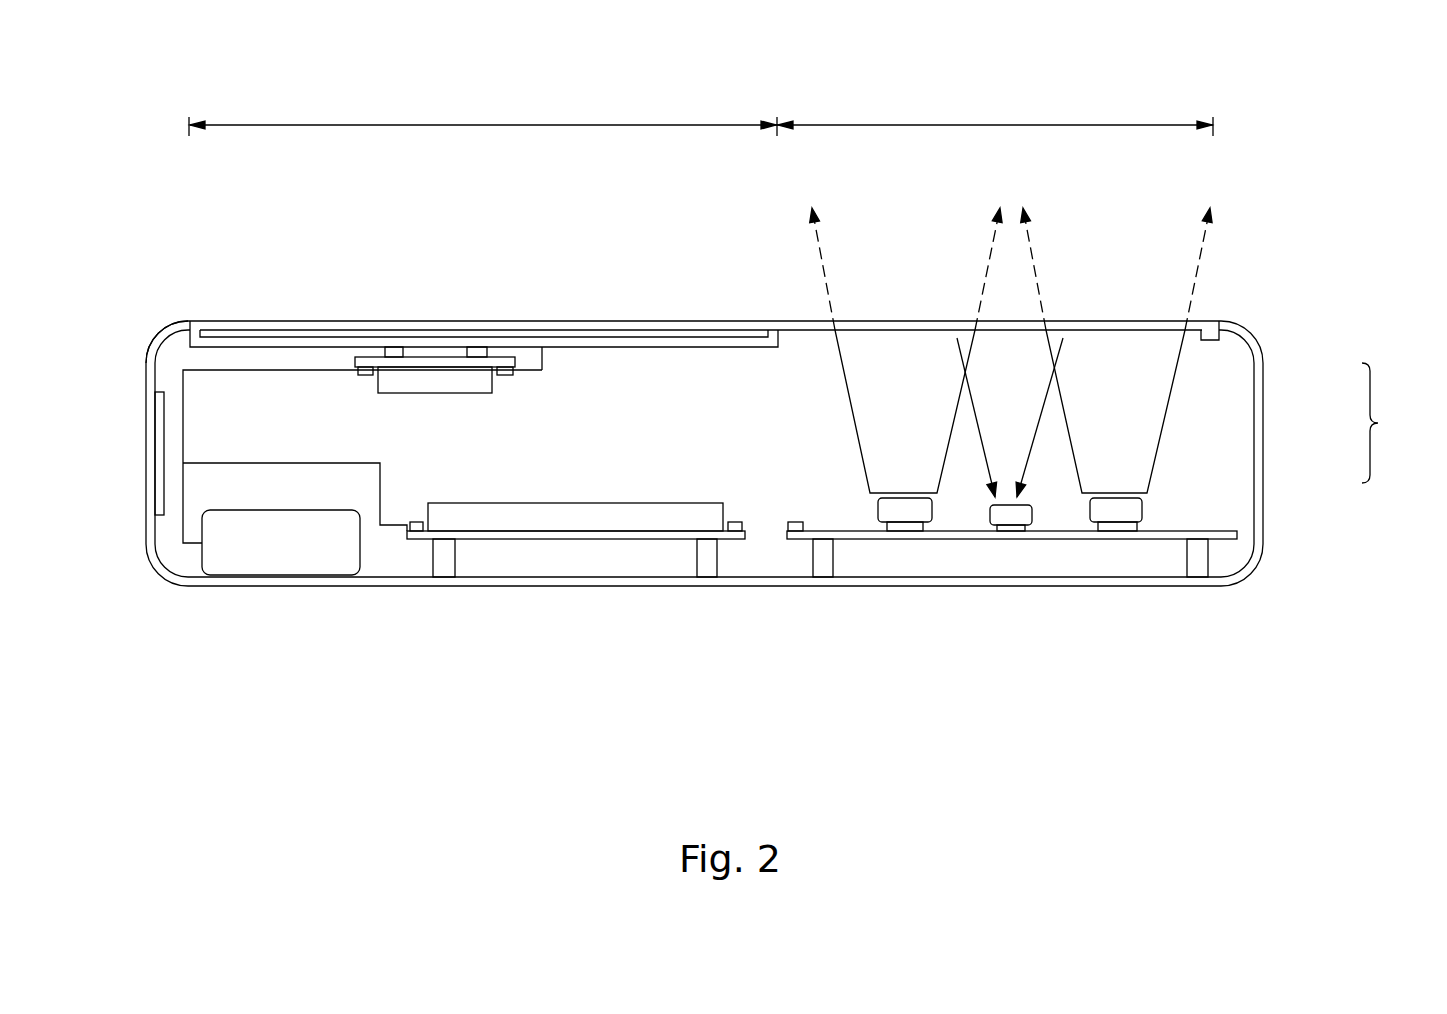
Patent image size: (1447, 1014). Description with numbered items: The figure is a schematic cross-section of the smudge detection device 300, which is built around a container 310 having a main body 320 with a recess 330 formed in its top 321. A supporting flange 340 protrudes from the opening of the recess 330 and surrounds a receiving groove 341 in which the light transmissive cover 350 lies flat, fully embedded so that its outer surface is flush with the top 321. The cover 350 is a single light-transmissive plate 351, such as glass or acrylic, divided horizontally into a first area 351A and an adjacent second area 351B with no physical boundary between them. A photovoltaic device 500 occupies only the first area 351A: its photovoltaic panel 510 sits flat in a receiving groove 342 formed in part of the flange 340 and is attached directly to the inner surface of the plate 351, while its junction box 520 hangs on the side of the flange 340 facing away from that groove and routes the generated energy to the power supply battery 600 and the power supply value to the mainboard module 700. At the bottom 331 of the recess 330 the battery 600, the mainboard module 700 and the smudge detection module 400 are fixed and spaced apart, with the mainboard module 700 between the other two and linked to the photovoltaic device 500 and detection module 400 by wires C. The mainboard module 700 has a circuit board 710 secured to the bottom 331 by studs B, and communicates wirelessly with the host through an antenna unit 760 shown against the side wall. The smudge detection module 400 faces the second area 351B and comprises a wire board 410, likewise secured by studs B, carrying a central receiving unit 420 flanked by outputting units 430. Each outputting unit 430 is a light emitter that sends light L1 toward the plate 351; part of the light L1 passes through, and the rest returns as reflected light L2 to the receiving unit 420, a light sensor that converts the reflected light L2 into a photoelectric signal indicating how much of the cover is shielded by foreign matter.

The smudge detection device 300 is at (1341, 86).
The container 310 is at (1396, 423).
The main body 320 is at (1258, 467).
The top 321 is at (180, 321).
The recess 330 is at (1212, 423).
The bottom 331 is at (395, 558).
The supporting flange 340 is at (1210, 340).
The receiving groove 341 is at (1220, 322).
The receiving groove 342 is at (192, 340).
The light transmissive cover 350 is at (212, 318).
The single light-transmissive plate 351 is at (290, 325).
The first area 351A is at (483, 116).
The second area 351B is at (995, 116).
The smudge detection module 400 is at (838, 672).
The wire board 410 is at (850, 539).
The receiving unit 420 is at (1012, 520).
The outputting unit 430 is at (905, 508).
The photovoltaic device 500 is at (345, 222).
The photovoltaic panel 510 is at (398, 333).
The junction box 520 is at (472, 380).
The power supply battery 600 is at (223, 562).
The mainboard module 700 is at (607, 531).
The circuit board 710 is at (493, 535).
The antenna unit 760 is at (150, 440).
The stud B is at (708, 562).
The wire C is at (292, 463).
The light L1 is at (985, 258).
The reflected light L2 is at (985, 383).